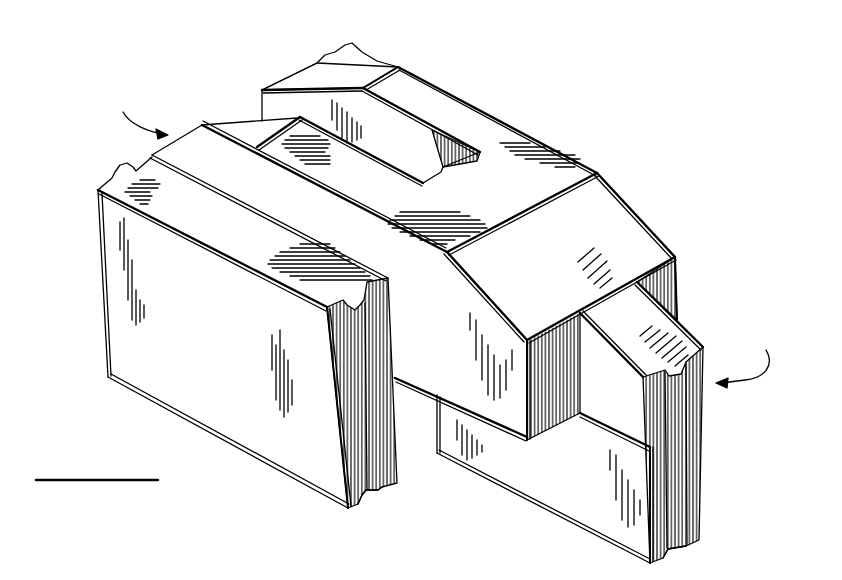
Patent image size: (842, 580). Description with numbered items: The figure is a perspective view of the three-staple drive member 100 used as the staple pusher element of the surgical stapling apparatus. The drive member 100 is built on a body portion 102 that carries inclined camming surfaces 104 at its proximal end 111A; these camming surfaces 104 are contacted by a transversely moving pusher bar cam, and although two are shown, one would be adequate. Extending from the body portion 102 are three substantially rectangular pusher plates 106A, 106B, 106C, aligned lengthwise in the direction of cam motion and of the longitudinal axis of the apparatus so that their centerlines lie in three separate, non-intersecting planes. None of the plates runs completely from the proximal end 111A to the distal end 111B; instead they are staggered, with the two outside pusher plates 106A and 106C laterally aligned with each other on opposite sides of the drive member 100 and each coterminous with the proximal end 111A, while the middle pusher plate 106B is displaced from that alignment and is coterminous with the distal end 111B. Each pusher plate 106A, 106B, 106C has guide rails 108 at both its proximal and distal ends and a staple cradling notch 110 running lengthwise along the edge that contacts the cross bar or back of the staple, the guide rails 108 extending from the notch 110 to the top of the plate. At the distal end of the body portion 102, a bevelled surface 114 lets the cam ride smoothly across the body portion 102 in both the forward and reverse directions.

The three-staple drive member 100 is at (283, 516).
The body portion 102 is at (567, 150).
The inclined camming surfaces 104 is at (279, 80).
The pusher plate 106A is at (226, 352).
The pusher plate 106B is at (597, 492).
The pusher plate 106C is at (366, 62).
The guide rails 108 is at (110, 173).
The staple cradling notch 110 is at (357, 504).
The proximal end 111A is at (134, 114).
The distal end 111B is at (750, 355).
The bevelled surface 114 is at (643, 230).